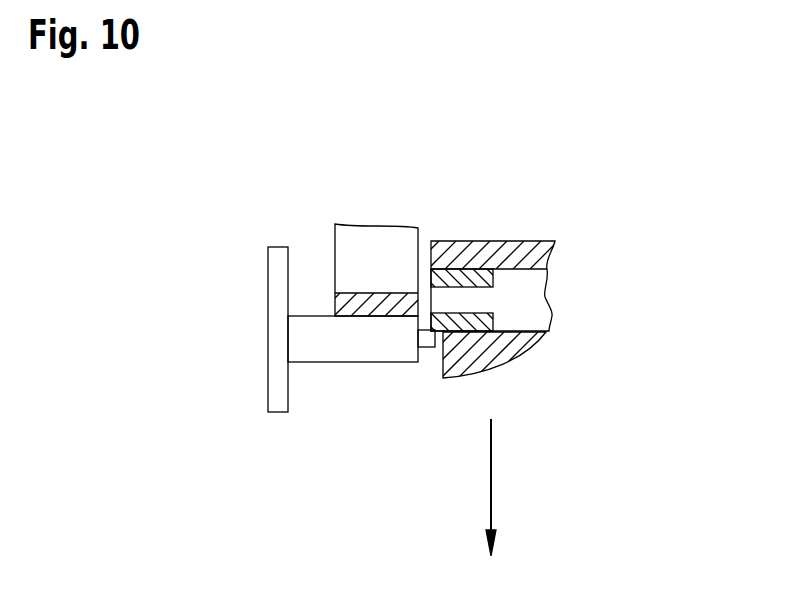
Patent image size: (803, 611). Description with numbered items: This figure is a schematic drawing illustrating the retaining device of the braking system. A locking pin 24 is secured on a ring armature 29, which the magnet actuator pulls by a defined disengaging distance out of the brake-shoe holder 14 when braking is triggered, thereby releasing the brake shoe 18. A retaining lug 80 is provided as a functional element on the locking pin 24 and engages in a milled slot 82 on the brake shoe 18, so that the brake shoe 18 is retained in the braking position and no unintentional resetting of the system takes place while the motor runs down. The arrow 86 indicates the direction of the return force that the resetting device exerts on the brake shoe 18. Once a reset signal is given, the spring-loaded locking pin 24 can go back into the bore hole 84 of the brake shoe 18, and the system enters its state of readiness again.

The brake-shoe holder 14 is at (343, 240).
The brake shoe 18 is at (507, 247).
The locking pin 24 is at (345, 352).
The ring armature 29 is at (275, 387).
The retaining lug 80 is at (427, 350).
The milled slot 82 is at (452, 333).
The bore hole 84 is at (506, 328).
The arrow 86 is at (491, 474).